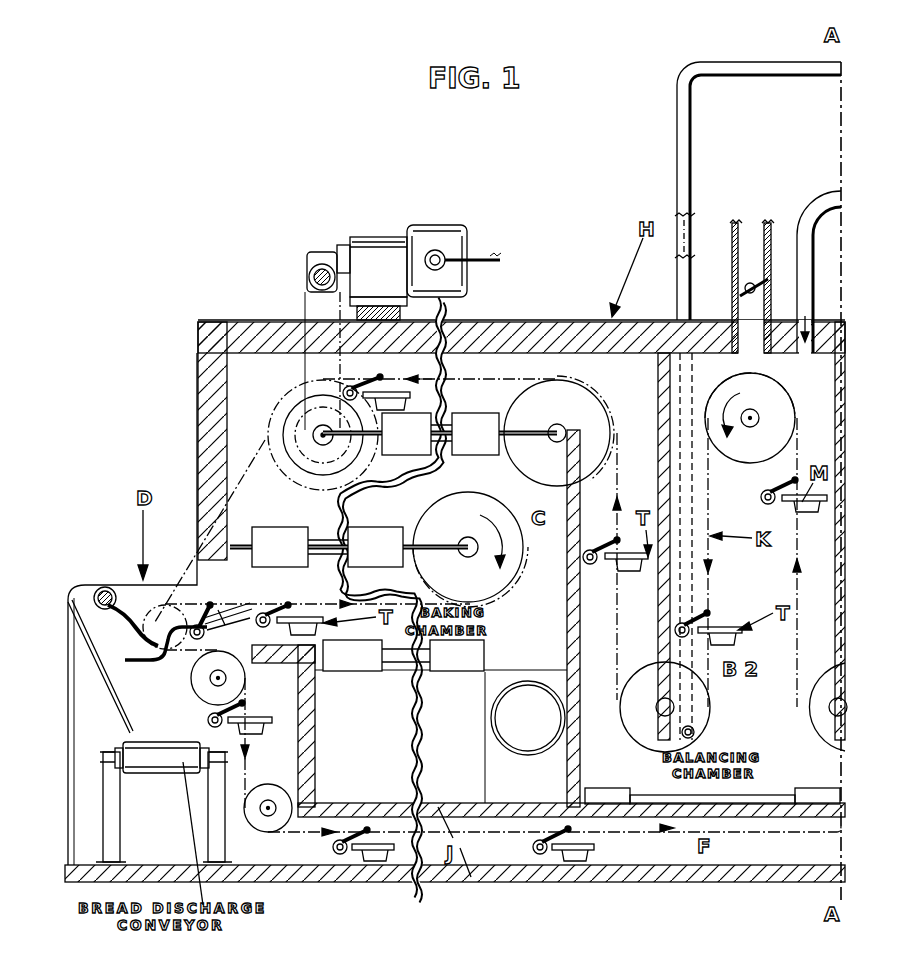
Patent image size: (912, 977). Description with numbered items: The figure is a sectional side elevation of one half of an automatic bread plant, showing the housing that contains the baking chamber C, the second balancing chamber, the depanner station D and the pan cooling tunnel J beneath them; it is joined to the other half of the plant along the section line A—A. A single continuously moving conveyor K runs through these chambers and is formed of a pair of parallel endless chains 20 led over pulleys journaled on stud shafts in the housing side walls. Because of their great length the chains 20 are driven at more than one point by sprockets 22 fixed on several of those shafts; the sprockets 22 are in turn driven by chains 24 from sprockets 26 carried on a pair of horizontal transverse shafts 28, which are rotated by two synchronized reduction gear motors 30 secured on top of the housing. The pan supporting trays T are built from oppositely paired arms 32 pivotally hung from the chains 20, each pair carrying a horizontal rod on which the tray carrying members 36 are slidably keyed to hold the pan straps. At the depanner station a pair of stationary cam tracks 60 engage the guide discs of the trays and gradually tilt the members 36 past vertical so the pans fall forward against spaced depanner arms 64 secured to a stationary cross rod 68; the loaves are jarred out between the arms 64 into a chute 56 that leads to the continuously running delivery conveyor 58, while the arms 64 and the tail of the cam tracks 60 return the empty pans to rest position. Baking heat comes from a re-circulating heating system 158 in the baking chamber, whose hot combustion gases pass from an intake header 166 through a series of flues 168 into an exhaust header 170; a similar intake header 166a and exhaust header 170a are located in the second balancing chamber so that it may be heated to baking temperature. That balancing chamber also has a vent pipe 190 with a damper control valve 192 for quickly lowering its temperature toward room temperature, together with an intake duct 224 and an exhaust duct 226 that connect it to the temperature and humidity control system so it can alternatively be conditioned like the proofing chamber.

The endless chains 20 is at (795, 580).
The sprockets 22 is at (313, 398).
The chains 24 is at (306, 368).
The sprockets 26 is at (325, 292).
The horizontal transverse shafts 28 is at (309, 277).
The reduction gear motors 30 is at (383, 250).
The arms 32 is at (776, 487).
The tray carrying members 36 is at (812, 510).
The chute 56 is at (98, 680).
The delivery conveyor 58 is at (176, 760).
The stationary cam tracks 60 is at (150, 664).
The depanner arms 64 is at (190, 622).
The stationary cross rod 68 is at (104, 594).
The heating system 158 is at (482, 742).
The intake header 166 is at (481, 661).
The intake header 166a is at (607, 797).
The flues 168 is at (418, 662).
The exhaust header 170 is at (357, 662).
The exhaust header 170a is at (817, 797).
The vent pipe 190 is at (730, 223).
The damper control valve 192 is at (740, 290).
The intake duct 224 is at (818, 192).
The exhaust duct 226 is at (793, 70).